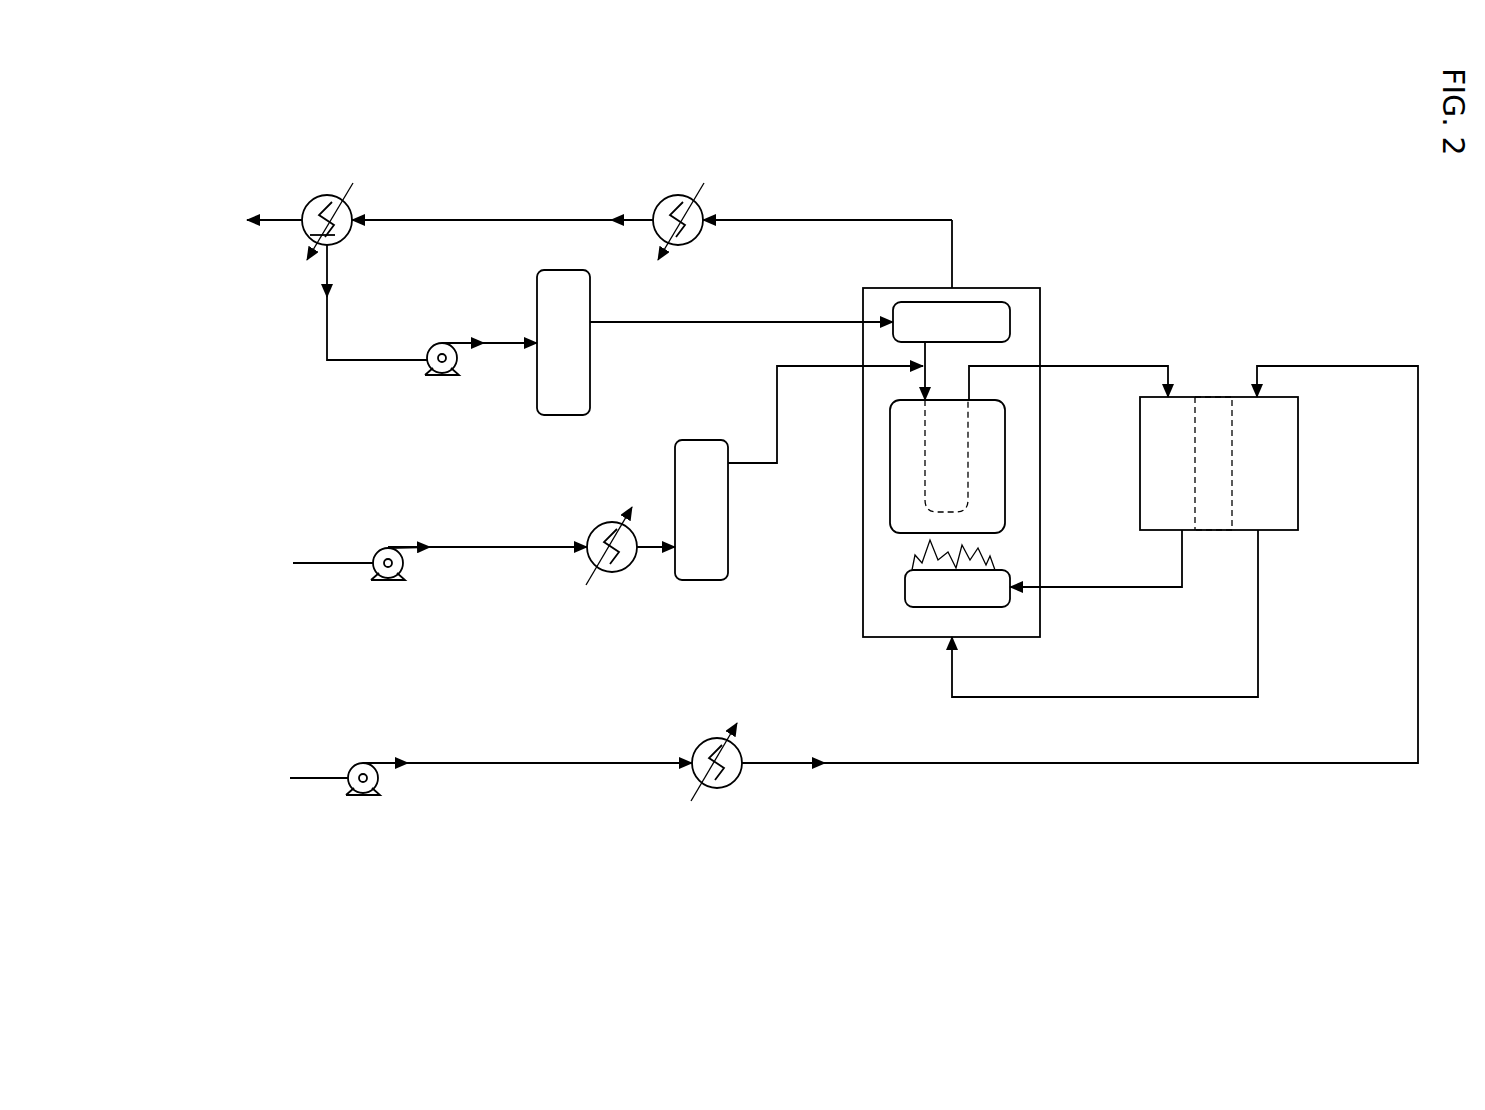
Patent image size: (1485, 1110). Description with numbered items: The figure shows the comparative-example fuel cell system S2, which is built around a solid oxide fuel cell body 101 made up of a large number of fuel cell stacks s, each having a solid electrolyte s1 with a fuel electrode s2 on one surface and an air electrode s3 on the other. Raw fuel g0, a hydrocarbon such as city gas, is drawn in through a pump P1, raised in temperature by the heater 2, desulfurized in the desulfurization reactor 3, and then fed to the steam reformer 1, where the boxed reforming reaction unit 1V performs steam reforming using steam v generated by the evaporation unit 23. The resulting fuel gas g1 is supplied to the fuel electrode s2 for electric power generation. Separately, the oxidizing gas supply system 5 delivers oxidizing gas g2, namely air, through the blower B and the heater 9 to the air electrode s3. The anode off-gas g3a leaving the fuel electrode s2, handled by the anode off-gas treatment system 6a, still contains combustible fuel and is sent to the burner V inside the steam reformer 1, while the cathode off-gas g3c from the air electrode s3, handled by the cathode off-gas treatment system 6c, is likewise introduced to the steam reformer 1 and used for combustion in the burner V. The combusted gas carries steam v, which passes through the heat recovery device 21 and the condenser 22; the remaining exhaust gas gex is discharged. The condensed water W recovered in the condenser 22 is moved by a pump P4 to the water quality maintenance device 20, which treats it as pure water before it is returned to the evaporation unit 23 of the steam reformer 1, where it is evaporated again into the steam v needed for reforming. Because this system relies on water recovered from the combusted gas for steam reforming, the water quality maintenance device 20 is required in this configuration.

The fuel cell system S2 is at (1253, 215).
The steam reformer 1 is at (905, 288).
The reforming reaction unit 1V is at (1005, 445).
The heater 2 is at (630, 572).
The desulfurization reactor 3 is at (728, 513).
The oxidizing gas supply system 5 is at (918, 762).
The anode off-gas treatment system 6a is at (1060, 590).
The cathode off-gas treatment system 6c is at (1262, 612).
The heater 9 is at (740, 785).
The water quality maintenance device 20 is at (537, 395).
The heat recovery device 21 is at (665, 200).
The condenser 22 is at (310, 200).
The evaporation unit 23 is at (970, 300).
The fuel cell body 101 is at (1298, 425).
The fuel cell stack s is at (1197, 378).
The solid electrolyte s1 is at (1206, 533).
The fuel electrode s2 is at (1145, 507).
The air electrode s3 is at (1275, 535).
The burner V is at (905, 592).
The steam v is at (425, 217).
The blower B is at (365, 795).
The raw fuel pump P1 is at (390, 580).
The condensed water pump P4 is at (435, 378).
The condensed water W is at (377, 302).
The raw fuel g0 is at (271, 575).
The fuel gas g1 is at (1050, 368).
The oxidizing gas g2 is at (297, 794).
The anode off-gas g3a is at (1096, 558).
The cathode off-gas g3c is at (1105, 613).
The exhaust gas gex is at (199, 239).